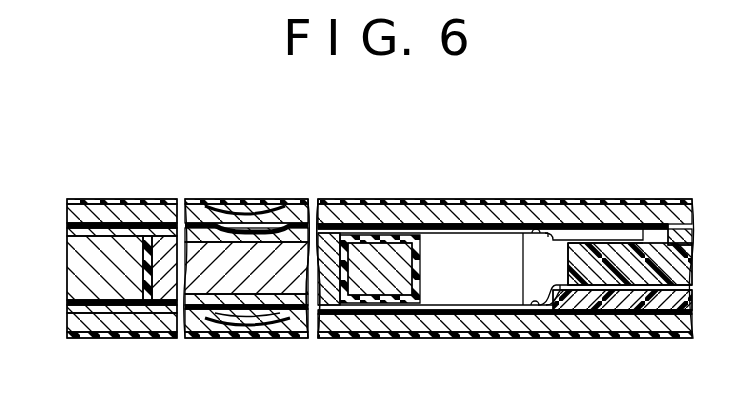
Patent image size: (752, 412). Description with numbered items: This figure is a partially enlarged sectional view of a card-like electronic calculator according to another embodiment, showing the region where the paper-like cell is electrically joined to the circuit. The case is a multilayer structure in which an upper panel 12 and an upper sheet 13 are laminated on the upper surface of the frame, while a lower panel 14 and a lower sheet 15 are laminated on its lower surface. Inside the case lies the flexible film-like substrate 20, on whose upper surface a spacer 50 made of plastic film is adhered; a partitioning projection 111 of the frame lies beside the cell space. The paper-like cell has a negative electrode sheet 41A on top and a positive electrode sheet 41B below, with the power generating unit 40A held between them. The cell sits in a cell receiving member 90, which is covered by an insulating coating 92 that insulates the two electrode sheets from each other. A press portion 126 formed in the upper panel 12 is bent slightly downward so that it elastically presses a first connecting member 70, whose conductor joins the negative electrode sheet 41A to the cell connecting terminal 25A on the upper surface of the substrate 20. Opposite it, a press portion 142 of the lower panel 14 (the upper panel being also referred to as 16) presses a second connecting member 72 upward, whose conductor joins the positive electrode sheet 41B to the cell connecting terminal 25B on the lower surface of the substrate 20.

The upper panel 12 is at (628, 220).
The upper sheet 13 is at (72, 256).
The lower panel 14 is at (664, 330).
The lower sheet 15 is at (627, 337).
The upper panel 16 is at (690, 303).
The flexible film-like substrate 20 is at (687, 258).
The cell connecting terminal 25A is at (566, 238).
The cell connecting terminal 25B is at (601, 291).
The power generating unit 40A is at (223, 296).
The negative electrode sheet 41A is at (283, 226).
The positive electrode sheet 41B is at (304, 336).
The spacer 50 is at (678, 231).
The first connecting member 70 is at (543, 231).
The second connecting member 72 is at (533, 307).
The cell receiving member 90 is at (393, 252).
The insulating coating 92 is at (148, 302).
The partitioning projection 111 is at (463, 305).
The press portion 126 is at (245, 212).
The press portion 142 is at (263, 322).